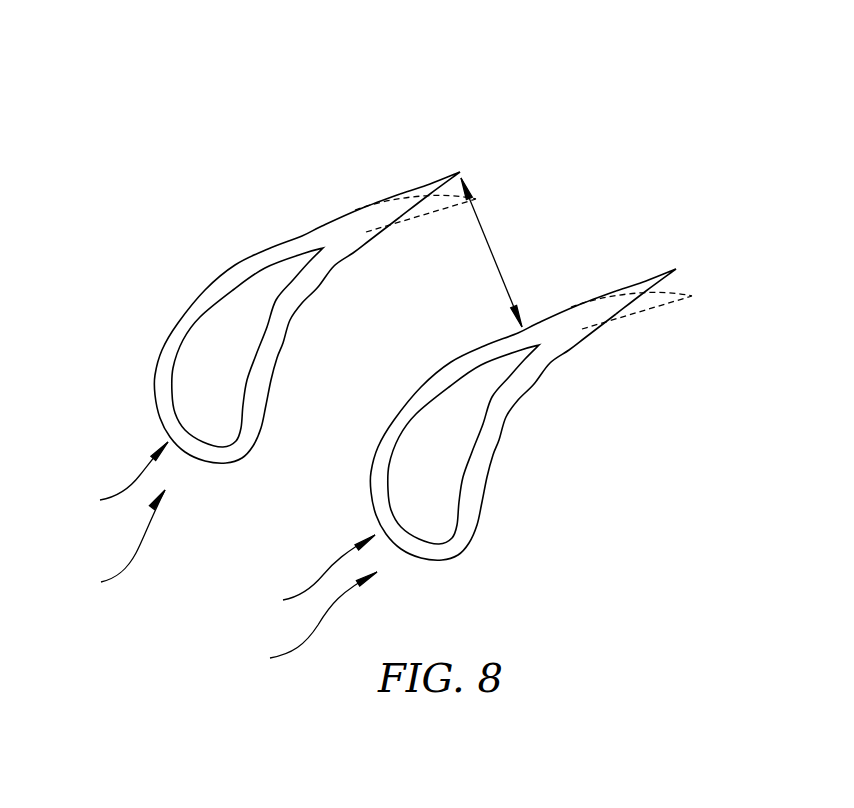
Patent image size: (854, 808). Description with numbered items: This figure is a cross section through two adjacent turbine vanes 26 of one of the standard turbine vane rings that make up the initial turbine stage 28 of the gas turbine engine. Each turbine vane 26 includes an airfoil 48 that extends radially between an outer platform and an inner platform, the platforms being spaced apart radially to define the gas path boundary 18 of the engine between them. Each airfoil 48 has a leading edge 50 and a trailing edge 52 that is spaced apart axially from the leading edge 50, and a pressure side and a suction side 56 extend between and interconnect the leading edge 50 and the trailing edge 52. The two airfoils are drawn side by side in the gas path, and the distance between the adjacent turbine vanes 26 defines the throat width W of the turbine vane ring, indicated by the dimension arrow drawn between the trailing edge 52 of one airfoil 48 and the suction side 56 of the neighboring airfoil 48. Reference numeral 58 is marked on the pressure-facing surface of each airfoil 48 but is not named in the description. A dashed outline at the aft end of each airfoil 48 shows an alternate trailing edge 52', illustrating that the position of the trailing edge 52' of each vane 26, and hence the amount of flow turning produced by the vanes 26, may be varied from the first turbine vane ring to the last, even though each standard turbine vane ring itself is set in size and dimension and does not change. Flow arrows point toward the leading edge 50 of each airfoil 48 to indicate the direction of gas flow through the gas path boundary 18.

The initial turbine stage 28 is at (150, 111).
The leading edge 50 is at (238, 456).
The trailing edge 52 is at (579, 212).
The trailing edge 52' is at (576, 231).
The suction side 56 is at (229, 275).
The pressure side 58 is at (291, 315).
The gas path boundary 18 is at (351, 390).
The airfoil 48 is at (223, 529).
The turbine vane 26 is at (224, 582).
The throat width W is at (497, 272).